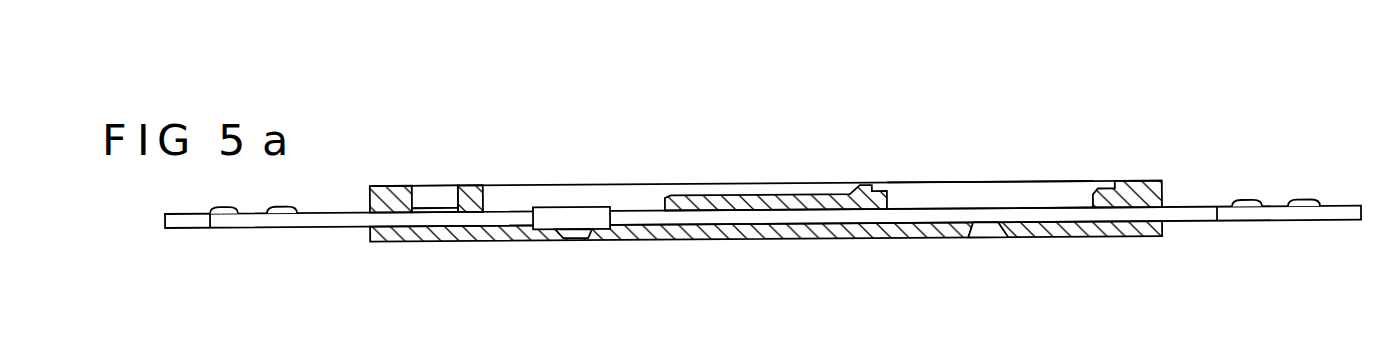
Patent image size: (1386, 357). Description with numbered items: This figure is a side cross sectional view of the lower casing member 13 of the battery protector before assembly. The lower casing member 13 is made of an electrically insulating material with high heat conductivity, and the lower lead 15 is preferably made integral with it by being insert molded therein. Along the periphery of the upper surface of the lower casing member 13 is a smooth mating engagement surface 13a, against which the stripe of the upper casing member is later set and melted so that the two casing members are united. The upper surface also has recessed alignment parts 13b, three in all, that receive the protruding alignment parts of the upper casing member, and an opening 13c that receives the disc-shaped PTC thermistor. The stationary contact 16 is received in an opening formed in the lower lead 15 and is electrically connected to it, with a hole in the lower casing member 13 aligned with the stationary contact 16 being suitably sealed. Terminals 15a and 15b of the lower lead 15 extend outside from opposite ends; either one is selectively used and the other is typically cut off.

The lower casing member 13 is at (683, 184).
The mating engagement surface 13a is at (383, 186).
The recessed alignment parts 13b is at (438, 194).
The opening 13c is at (1028, 198).
The lower lead 15 is at (650, 217).
The terminal 15a is at (1278, 214).
The terminal 15b is at (250, 221).
The stationary contact 16 is at (568, 218).